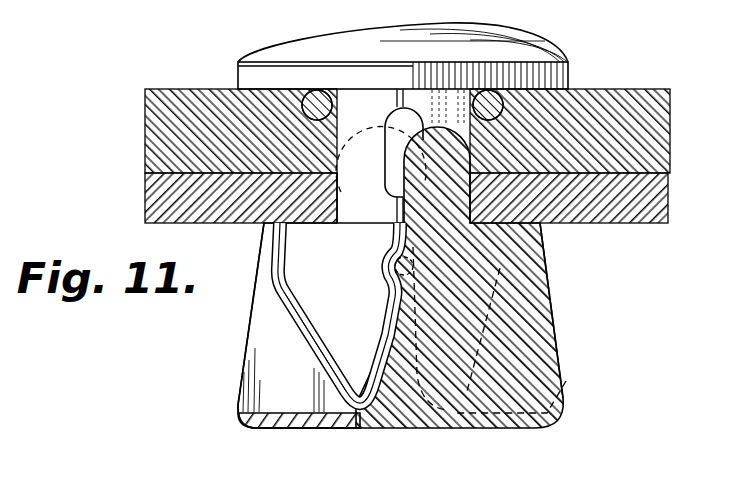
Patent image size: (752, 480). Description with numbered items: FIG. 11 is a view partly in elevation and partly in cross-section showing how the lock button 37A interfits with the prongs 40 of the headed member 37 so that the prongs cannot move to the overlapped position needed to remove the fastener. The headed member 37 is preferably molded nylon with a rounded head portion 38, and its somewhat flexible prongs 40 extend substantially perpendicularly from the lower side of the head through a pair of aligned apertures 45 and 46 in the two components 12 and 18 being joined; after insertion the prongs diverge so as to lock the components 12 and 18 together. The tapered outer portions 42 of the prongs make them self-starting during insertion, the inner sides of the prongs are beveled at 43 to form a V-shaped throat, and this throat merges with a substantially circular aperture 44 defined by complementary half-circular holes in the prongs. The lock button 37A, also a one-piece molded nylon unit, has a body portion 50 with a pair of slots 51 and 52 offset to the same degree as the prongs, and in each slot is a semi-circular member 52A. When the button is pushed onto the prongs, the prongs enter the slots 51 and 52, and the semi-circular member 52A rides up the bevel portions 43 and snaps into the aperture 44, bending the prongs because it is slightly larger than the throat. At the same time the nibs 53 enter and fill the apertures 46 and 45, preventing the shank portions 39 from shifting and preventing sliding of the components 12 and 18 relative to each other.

The component 12 is at (158, 186).
The component 18 is at (157, 114).
The headed member 37 is at (230, 67).
The lock button 37A is at (570, 337).
The head portion 38 is at (527, 49).
The shank portions 39 is at (357, 112).
The prongs 40 is at (340, 336).
The tapered outer portions 42 is at (287, 320).
The bevel portions 43 is at (391, 424).
The aperture 44 is at (391, 254).
The aperture 45 is at (337, 142).
The aperture 46 is at (339, 193).
The body portion 50 is at (262, 255).
The slot 51 is at (566, 381).
The slot 52 is at (258, 362).
The semi-circular member 52A is at (390, 277).
The nibs 53 is at (486, 191).